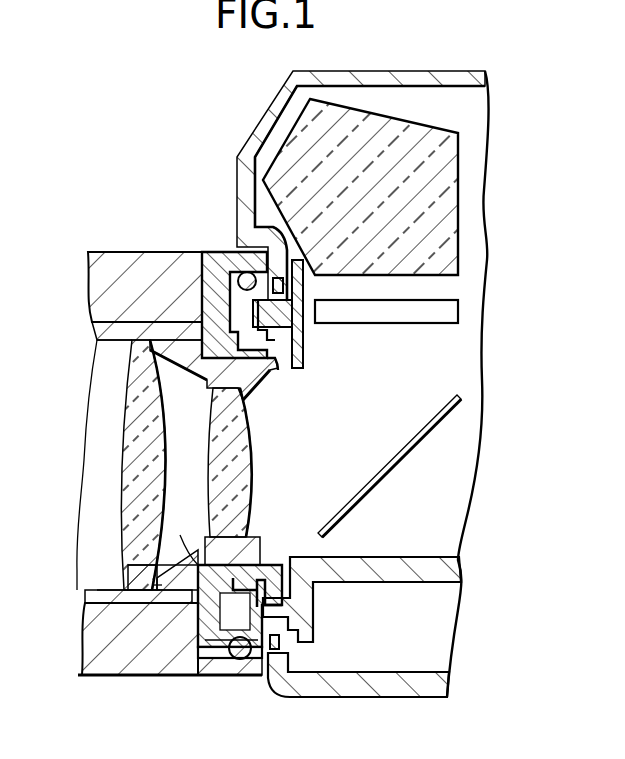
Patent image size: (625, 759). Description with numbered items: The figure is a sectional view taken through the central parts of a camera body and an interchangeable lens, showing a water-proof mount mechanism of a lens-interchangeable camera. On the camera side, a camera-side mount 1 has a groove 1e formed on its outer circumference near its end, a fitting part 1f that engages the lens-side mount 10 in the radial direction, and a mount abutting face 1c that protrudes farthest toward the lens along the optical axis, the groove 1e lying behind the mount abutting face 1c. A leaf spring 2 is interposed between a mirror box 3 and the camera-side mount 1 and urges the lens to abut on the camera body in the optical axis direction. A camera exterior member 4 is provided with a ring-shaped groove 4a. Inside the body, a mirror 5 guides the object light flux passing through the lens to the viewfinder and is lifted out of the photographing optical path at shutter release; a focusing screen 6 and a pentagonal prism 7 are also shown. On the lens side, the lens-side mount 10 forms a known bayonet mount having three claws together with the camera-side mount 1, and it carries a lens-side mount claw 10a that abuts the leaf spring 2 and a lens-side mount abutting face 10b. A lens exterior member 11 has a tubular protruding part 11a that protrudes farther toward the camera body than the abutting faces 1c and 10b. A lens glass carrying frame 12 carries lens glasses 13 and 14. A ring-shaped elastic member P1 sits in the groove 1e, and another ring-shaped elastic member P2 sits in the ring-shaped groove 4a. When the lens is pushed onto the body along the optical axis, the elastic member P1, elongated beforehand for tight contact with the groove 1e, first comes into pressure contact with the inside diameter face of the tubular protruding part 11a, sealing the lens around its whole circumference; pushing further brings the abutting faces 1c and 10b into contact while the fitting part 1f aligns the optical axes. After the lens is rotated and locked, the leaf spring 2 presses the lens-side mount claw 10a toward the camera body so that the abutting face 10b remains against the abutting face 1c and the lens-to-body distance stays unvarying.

The camera-side mount 1 is at (190, 645).
The mount abutting face 1c is at (148, 588).
The groove 1e is at (212, 652).
The fitting part 1f is at (186, 535).
The leaf spring 2 is at (257, 572).
The mirror box 3 is at (301, 345).
The camera exterior member 4 is at (255, 135).
The ring-shaped groove 4a is at (282, 313).
The mirror 5 is at (380, 470).
The focusing screen 6 is at (462, 312).
The pentagonal prism 7 is at (470, 226).
The lens-side mount 10 is at (172, 640).
The lens-side mount claw 10a is at (267, 580).
The lens-side mount abutting face 10b is at (228, 305).
The lens exterior member 11 is at (102, 660).
The tubular protruding part 11a is at (234, 668).
The lens glass carrying frame 12 is at (157, 572).
The lens glass 13 is at (245, 462).
The lens glass 14 is at (127, 396).
The ring-shaped elastic member P1 is at (245, 271).
The ring-shaped elastic member P2 is at (275, 278).